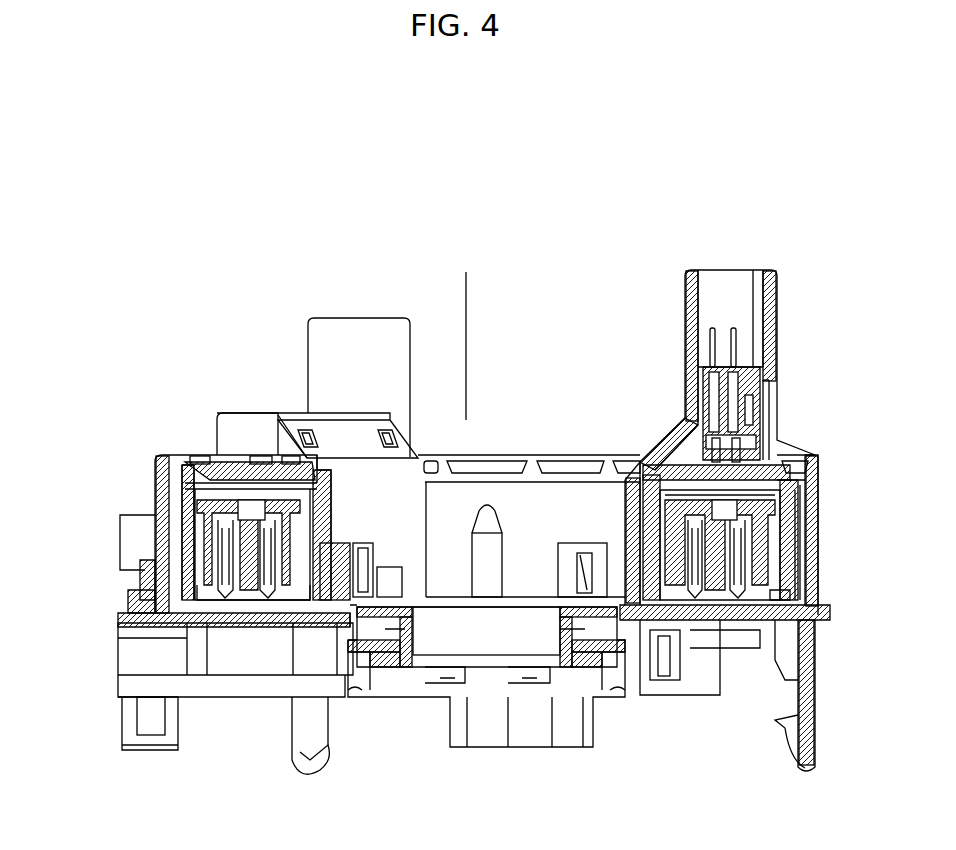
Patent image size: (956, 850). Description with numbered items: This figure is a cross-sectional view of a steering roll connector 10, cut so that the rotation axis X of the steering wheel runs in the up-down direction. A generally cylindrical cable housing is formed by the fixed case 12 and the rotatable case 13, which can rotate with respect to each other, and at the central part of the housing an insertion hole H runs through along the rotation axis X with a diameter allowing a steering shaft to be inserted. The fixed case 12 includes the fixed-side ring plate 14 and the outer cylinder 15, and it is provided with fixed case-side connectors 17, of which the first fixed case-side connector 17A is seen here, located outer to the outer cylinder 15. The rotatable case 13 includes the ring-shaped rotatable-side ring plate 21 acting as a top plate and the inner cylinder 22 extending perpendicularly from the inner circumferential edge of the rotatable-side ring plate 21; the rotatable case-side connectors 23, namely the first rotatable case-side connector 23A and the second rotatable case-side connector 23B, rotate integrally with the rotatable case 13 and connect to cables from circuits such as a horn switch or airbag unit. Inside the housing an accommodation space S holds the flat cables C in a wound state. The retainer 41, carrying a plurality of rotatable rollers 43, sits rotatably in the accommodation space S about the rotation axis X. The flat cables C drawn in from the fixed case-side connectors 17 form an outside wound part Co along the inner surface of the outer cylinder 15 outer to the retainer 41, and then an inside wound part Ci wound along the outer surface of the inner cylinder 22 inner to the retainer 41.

The electrical junction box / connector device 10 is at (220, 282).
The fixed case 12 is at (224, 702).
The rotatable case 13 is at (498, 450).
The fixed-side ring plate 14 is at (207, 630).
The outer cylinder 15 is at (152, 504).
The fixed case-side connectors 17 is at (118, 668).
The first fixed case-side connector 17A is at (189, 697).
The rotatable-side ring plate 21 is at (196, 455).
The inner cylinder 22 is at (338, 518).
The rotatable case-side connectors 23 is at (561, 332).
The first rotatable case-side connector 23A is at (362, 318).
The second rotatable case-side connector 23B is at (722, 270).
The retainer 41 is at (780, 595).
The rotatable rollers 43 is at (796, 505).
The rotation axis X is at (466, 332).
The insertion hole H is at (532, 526).
The accommodation space S is at (773, 460).
The flat cables C is at (735, 499).
The inside wound part Ci is at (625, 500).
The outside wound part Co is at (792, 549).